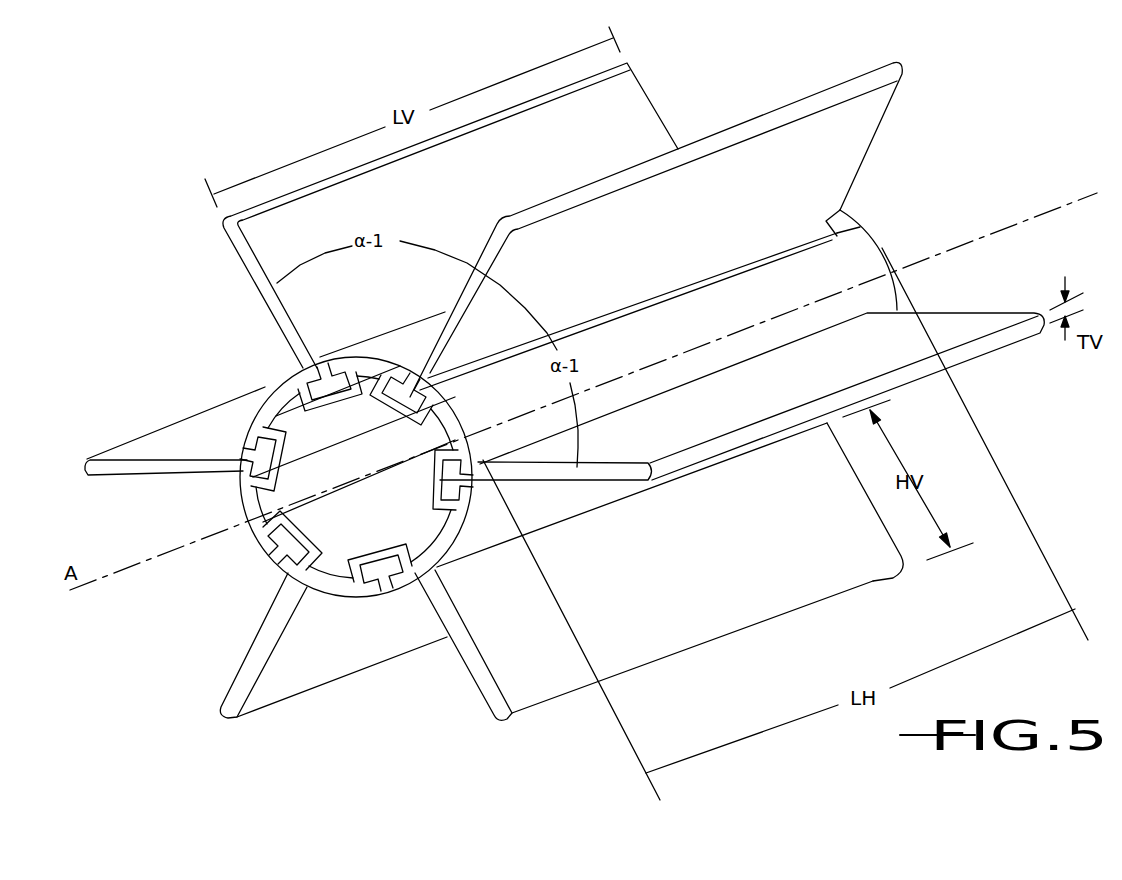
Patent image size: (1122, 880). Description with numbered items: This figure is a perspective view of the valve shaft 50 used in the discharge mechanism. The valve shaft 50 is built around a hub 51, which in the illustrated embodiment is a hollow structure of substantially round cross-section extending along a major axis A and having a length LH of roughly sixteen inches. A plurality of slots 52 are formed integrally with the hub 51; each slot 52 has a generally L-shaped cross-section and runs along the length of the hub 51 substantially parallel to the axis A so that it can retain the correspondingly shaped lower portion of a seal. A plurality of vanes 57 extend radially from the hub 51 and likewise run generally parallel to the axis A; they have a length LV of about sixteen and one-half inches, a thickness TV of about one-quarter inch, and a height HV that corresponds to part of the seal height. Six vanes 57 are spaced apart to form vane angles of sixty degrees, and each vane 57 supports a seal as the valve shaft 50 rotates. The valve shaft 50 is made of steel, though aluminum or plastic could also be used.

The valve shaft 50 is at (241, 497).
The hub 51 is at (227, 527).
The slots 52 is at (333, 378).
The vanes 57 is at (248, 261).